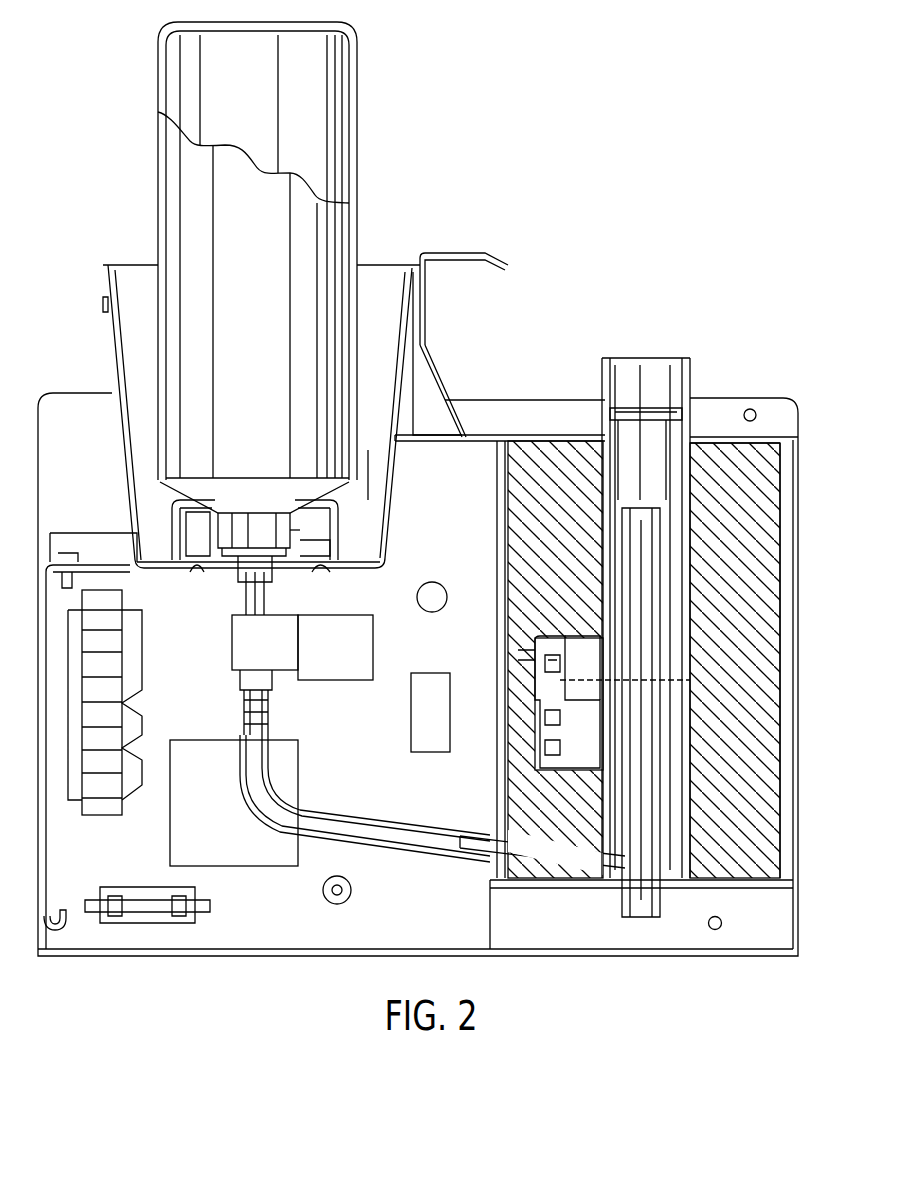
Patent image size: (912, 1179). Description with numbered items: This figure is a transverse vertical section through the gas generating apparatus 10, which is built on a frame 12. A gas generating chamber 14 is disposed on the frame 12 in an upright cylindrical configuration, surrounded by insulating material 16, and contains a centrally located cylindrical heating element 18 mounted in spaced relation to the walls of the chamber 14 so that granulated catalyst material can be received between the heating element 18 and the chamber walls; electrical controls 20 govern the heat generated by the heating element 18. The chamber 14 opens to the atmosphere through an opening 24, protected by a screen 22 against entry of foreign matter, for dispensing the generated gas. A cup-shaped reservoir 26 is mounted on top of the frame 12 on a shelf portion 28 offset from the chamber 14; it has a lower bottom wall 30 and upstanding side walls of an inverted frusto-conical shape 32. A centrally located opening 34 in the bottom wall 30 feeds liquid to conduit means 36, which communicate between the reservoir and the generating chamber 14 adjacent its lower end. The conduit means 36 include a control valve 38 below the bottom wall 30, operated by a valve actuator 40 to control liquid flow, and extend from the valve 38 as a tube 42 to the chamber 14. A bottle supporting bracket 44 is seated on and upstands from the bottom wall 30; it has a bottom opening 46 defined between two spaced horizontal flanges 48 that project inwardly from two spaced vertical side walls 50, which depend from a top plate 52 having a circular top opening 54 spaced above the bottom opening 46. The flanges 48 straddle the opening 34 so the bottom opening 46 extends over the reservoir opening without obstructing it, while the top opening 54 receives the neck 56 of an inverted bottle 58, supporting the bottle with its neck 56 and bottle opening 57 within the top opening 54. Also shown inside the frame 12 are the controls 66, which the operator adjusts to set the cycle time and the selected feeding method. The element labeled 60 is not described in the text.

The gas generating apparatus 10 is at (825, 588).
The frame 12 is at (262, 952).
The gas generating chamber 14 is at (700, 494).
The insulating material 16 is at (760, 666).
The heating element 18 is at (646, 513).
The electrical controls 20 is at (530, 705).
The screen 22 is at (650, 408).
The opening 24 is at (614, 358).
The cup-shaped reservoir 26 is at (95, 361).
The shelf portion 28 is at (108, 562).
The bottom wall 30 is at (417, 597).
The inverted frusto-conical shape 32 is at (430, 365).
The opening 34 is at (226, 580).
The conduit means 36 is at (318, 713).
The control valve 38 is at (232, 650).
The valve actuator 40 is at (352, 663).
The tube 42 is at (340, 812).
The bottle supporting bracket 44 is at (172, 518).
The bottom opening 46 is at (192, 574).
The horizontal flanges 48 is at (322, 574).
The vertical side walls 50 is at (342, 518).
The top plate 52 is at (386, 492).
The top opening 54 is at (196, 534).
The neck 56 is at (292, 530).
The bottle opening 57 is at (287, 574).
The inverted bottle 58 is at (232, 355).
The hook 60 is at (382, 262).
The controls 66 is at (126, 704).